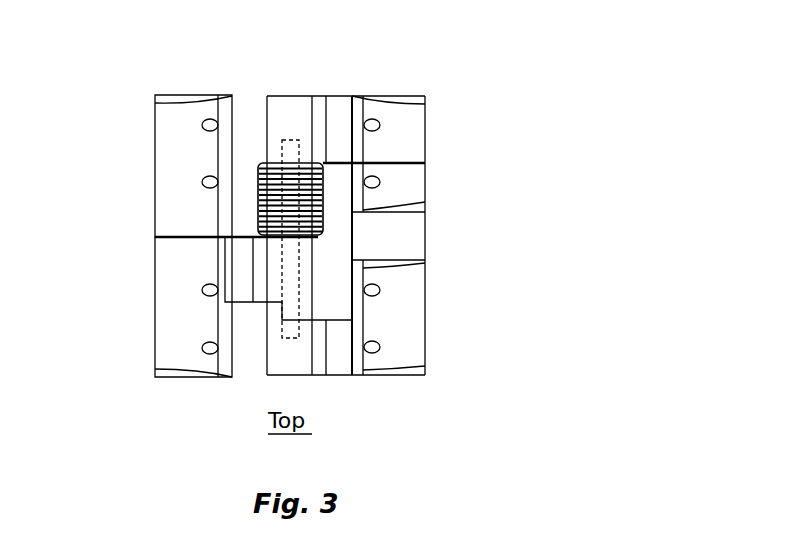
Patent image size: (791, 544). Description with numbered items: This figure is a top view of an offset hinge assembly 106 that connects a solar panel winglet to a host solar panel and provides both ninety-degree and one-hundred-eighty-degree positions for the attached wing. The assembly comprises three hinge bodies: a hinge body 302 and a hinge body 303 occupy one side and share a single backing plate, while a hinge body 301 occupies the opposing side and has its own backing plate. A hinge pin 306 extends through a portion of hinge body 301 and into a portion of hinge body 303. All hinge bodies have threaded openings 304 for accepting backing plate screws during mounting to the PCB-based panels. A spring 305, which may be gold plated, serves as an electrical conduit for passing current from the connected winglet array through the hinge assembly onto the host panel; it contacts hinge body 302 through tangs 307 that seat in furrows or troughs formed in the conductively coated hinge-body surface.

The offset hinge assembly 106 is at (490, 211).
The hinge body 301 is at (153, 151).
The hinge body 302 is at (422, 131).
The hinge body 303 is at (422, 338).
The threaded openings 304 is at (203, 347).
The spring 305 is at (323, 212).
The hinge pin 306 is at (287, 138).
The tangs 307 is at (155, 237).